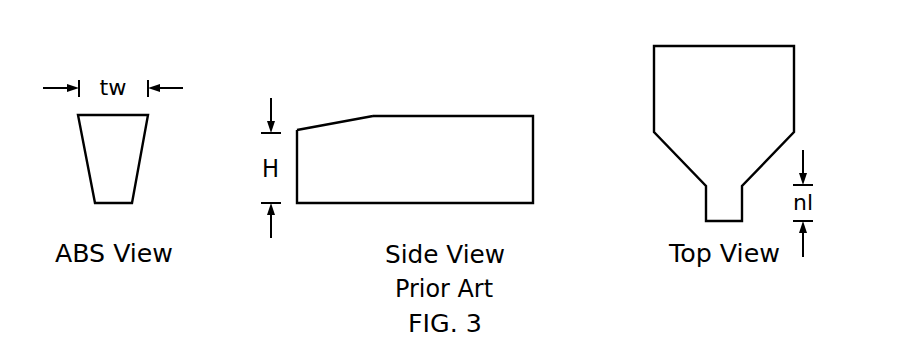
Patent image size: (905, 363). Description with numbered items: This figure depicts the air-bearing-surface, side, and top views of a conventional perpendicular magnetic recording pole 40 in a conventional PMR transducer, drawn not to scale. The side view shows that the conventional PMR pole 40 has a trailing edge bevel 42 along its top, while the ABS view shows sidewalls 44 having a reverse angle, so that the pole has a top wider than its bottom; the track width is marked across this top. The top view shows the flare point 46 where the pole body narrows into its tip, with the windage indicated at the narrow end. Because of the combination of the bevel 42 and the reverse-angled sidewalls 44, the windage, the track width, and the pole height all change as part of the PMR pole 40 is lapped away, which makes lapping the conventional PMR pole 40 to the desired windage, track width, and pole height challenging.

The conventional perpendicular magnetic recording (PMR) pole 40 is at (432, 41).
The trailing edge bevel 42 is at (332, 113).
The sidewalls 44 is at (153, 167).
The flare point 46 is at (688, 186).